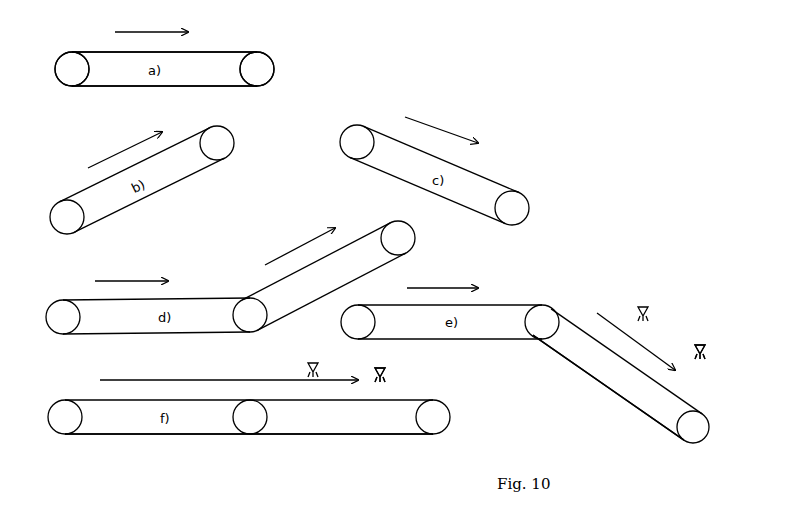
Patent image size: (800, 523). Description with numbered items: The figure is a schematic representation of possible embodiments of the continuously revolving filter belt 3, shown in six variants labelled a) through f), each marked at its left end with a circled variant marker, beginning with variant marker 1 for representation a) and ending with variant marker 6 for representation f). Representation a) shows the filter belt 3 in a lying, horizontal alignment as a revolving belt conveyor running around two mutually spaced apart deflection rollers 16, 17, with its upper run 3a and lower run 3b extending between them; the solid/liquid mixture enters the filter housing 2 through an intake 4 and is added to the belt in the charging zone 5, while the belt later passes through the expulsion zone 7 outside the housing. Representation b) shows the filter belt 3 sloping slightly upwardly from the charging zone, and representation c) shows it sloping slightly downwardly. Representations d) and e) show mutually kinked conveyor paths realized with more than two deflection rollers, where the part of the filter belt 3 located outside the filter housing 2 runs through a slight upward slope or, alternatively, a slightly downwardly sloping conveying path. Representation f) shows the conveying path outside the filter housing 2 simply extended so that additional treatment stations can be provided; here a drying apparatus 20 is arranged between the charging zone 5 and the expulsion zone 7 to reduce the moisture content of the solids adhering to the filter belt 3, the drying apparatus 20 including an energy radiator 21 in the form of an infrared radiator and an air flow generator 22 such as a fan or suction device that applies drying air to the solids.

The step 1 tube 1 is at (164, 69).
The filter housing 2 is at (142, 180).
The filter belt 3 is at (55, 52).
The upper run 3a is at (97, 50).
The lower run 3b is at (107, 88).
The intake 4 is at (230, 277).
The charging zone 5 is at (110, 377).
The step 6 tube 6 is at (249, 417).
The expulsion zone 7 is at (343, 446).
The deflection roller 16 is at (70, 85).
The deflection roller 17 is at (260, 84).
The drying apparatus 20 is at (403, 371).
The energy radiator 21 is at (665, 296).
The air flow generator 22 is at (703, 328).